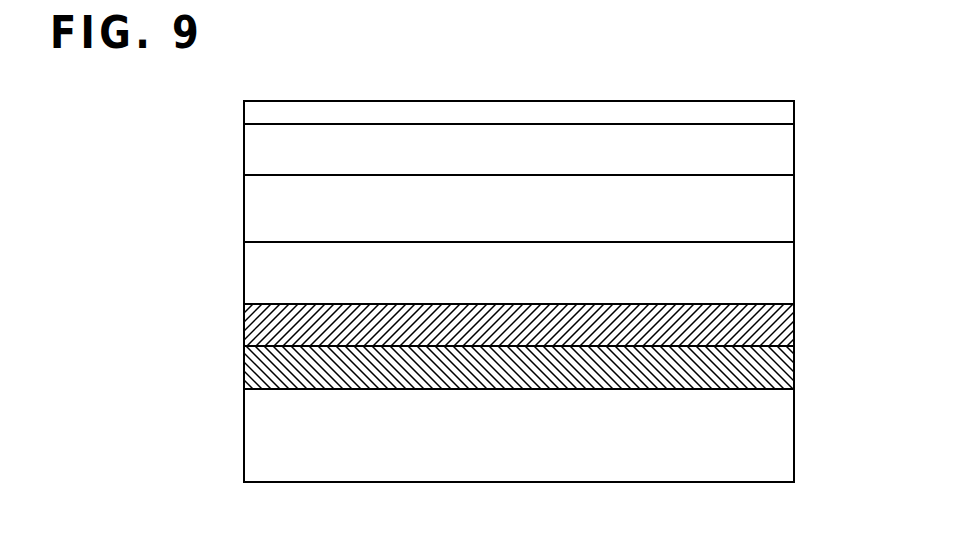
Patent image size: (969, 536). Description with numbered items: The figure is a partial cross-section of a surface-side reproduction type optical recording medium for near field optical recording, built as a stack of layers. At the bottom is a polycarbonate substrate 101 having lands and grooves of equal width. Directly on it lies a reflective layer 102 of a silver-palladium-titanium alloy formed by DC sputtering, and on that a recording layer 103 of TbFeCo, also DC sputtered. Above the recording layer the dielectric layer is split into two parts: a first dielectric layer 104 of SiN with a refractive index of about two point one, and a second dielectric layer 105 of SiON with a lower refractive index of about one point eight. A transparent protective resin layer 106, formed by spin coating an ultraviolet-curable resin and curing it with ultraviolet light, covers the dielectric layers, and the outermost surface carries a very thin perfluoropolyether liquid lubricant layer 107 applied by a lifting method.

The substrate 101 is at (794, 420).
The reflective layer 102 is at (794, 363).
The recording layer 103 is at (794, 320).
The first dielectric layer 104 is at (794, 267).
The second dielectric layer 105 is at (794, 197).
The transparent protective resin layer 106 is at (794, 131).
The liquid lubricant layer 107 is at (794, 103).